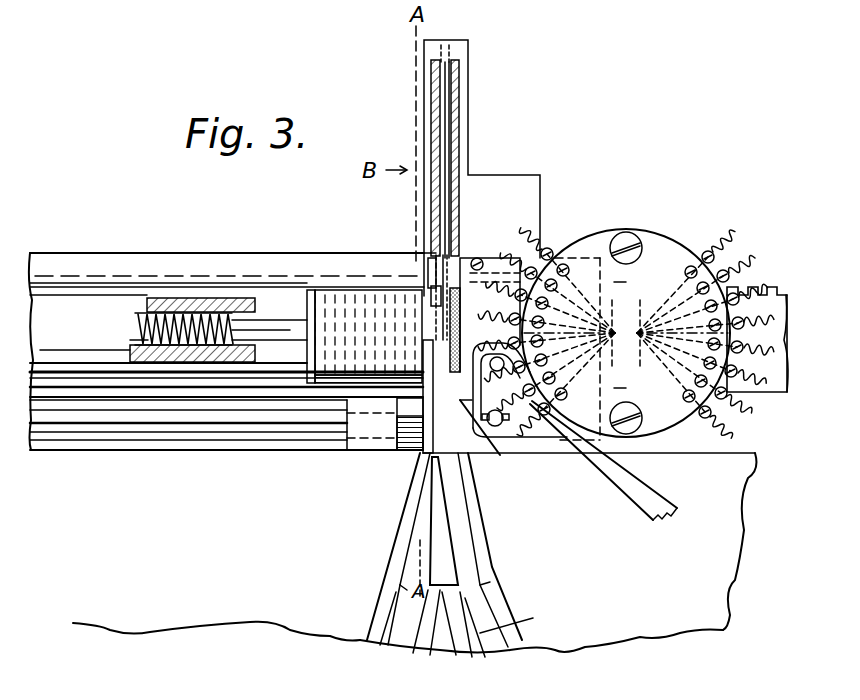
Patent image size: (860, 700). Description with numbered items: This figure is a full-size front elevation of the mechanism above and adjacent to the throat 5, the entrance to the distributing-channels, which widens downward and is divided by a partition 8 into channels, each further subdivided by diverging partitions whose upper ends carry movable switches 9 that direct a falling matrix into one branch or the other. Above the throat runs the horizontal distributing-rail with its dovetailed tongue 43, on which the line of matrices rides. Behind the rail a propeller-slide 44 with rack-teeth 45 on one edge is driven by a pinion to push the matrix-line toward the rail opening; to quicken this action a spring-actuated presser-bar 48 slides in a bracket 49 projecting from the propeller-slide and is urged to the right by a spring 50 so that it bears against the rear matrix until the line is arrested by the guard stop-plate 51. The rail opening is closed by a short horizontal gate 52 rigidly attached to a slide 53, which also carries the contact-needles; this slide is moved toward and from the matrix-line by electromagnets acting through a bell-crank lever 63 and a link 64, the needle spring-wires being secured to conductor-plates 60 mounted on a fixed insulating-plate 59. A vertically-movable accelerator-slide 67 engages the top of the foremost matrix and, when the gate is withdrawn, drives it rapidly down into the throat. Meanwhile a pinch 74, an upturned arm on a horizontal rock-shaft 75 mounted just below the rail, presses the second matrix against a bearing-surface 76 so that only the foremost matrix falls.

The throat 5 is at (460, 508).
The partition 8 is at (453, 610).
The switch 9 is at (438, 534).
The dovetailed tongue 43 is at (277, 388).
The propeller-slide 44 is at (775, 392).
The rack-teeth 45 is at (757, 277).
The presser-bar 48 is at (307, 300).
The bracket 49 is at (226, 351).
The spring 50 is at (136, 328).
The guard stop-plate 51 is at (447, 158).
The gate 52 is at (442, 396).
The slide 53 is at (485, 315).
The insulating-plate 59 is at (626, 334).
The conductor-plate 60 is at (711, 262).
The bell-crank lever 63 is at (499, 432).
The link 64 is at (603, 460).
The accelerator-slide 67 is at (437, 133).
The pinch 74 is at (406, 454).
The rock-shaft 75 is at (198, 444).
The bearing-surface 76 is at (427, 276).